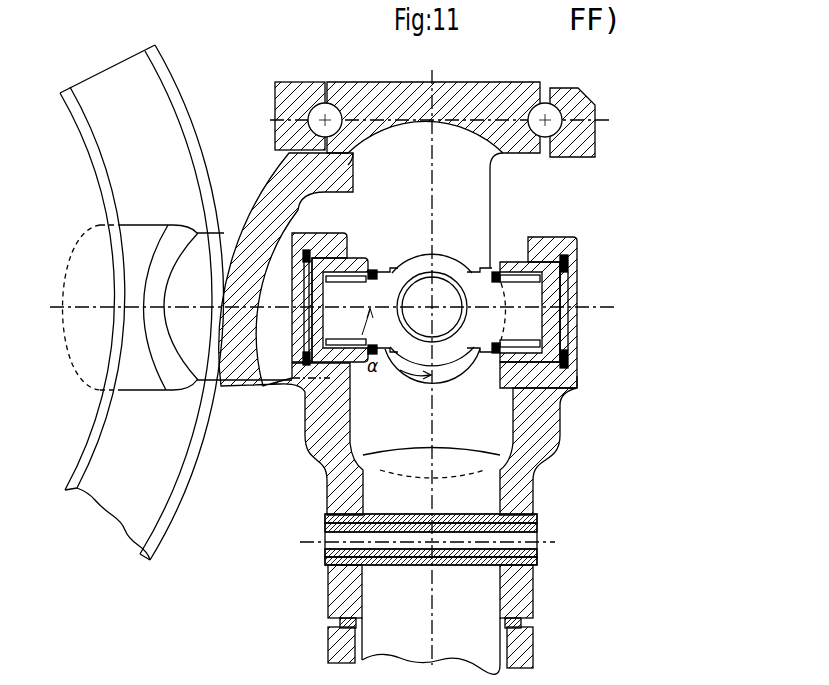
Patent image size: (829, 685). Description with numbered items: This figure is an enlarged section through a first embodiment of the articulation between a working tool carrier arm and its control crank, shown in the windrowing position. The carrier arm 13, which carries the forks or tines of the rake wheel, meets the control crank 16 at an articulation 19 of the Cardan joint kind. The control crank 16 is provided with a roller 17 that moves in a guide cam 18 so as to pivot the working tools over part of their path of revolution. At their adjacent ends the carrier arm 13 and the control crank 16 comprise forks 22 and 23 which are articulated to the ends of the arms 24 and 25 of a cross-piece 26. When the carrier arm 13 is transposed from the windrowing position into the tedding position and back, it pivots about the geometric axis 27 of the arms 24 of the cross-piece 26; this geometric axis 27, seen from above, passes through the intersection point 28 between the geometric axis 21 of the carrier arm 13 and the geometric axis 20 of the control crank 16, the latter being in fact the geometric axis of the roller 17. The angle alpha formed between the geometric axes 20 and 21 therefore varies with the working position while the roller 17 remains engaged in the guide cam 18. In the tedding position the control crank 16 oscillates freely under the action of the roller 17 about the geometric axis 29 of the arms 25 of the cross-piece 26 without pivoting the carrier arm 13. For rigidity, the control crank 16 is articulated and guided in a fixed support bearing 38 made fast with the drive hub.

The carrier arm 13 is at (460, 595).
The control crank 16 is at (195, 360).
The roller 17 is at (137, 373).
The guide cam 18 is at (158, 465).
The articulation 19 is at (445, 290).
The geometric axis of the control crank 20 is at (198, 305).
The geometric axis of the carrier arm 21 is at (503, 440).
The fork 22 is at (550, 386).
The fork 23 is at (565, 383).
The arm of the cross-piece 24 is at (573, 237).
The arm of the cross-piece 25 is at (477, 327).
The cross-piece 26 is at (460, 255).
The geometric axis of the cross-piece arm 27 is at (400, 273).
The intersection point 28 is at (400, 273).
The geometric axis of the cross-piece arm 29 is at (600, 309).
The fixed support bearing 38 is at (575, 110).